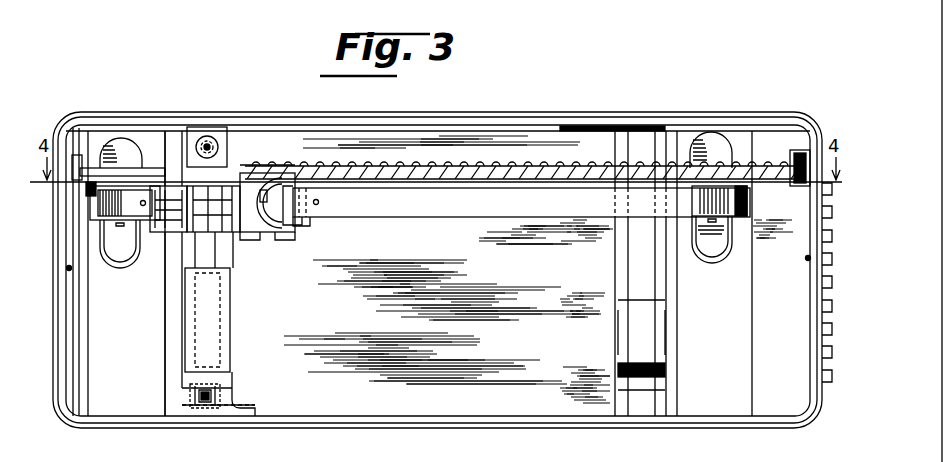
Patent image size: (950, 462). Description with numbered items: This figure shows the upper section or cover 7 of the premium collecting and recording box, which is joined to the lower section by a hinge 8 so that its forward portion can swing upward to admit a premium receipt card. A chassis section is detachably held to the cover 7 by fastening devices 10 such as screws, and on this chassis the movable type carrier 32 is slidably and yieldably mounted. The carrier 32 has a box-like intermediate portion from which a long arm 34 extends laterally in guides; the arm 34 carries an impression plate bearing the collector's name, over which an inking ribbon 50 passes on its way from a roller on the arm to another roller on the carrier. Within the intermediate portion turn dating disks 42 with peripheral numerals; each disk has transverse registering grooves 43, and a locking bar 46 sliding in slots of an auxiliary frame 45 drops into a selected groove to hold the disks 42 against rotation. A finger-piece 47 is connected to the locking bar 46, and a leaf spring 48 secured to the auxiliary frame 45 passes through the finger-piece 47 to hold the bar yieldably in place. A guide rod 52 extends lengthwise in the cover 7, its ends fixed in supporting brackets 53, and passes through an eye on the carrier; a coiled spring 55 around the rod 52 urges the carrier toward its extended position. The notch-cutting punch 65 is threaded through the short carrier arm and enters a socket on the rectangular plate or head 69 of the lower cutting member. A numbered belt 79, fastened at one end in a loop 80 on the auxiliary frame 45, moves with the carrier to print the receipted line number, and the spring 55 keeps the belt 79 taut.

The upper section or cover 7 is at (685, 114).
The hinge 8 is at (818, 373).
The fastening devices 10 is at (70, 268).
The movable type carrier 32 is at (247, 294).
The long arm 34 is at (187, 388).
The disks 42 is at (173, 132).
The registering grooves 43 is at (243, 192).
The auxiliary frame 45 is at (289, 233).
The locking bar 46 is at (245, 165).
The finger-piece 47 is at (298, 190).
The leaf spring 48 is at (259, 233).
The inking ribbon 50 is at (210, 243).
The guide rod 52 is at (570, 178).
The supporting brackets 53 is at (70, 150).
The coiled spring 55 is at (490, 162).
The punch 65 is at (210, 143).
The rectangular plate or head 69 is at (228, 205).
The belt 79 is at (112, 178).
The loop 80 is at (303, 220).